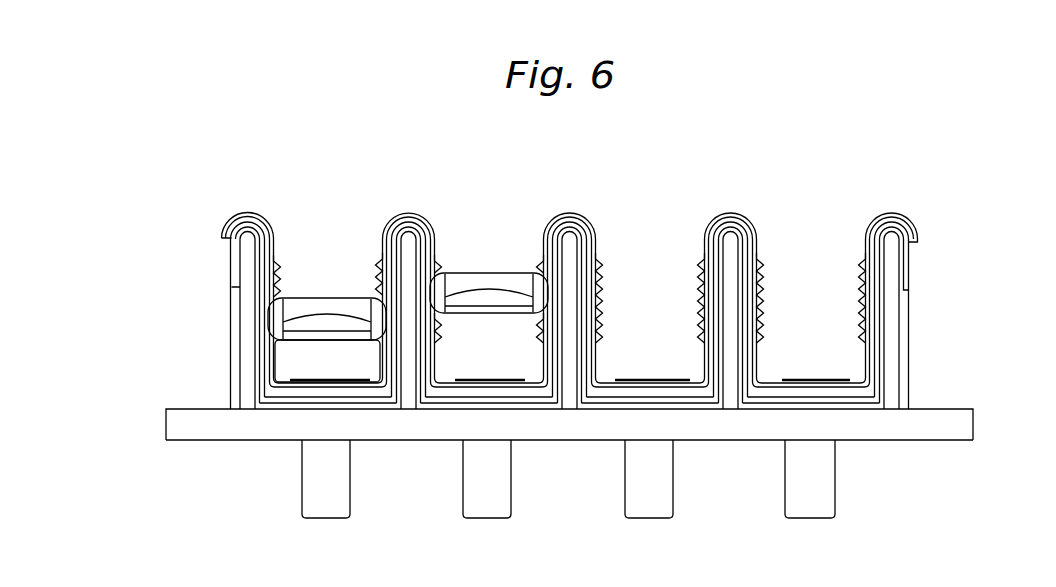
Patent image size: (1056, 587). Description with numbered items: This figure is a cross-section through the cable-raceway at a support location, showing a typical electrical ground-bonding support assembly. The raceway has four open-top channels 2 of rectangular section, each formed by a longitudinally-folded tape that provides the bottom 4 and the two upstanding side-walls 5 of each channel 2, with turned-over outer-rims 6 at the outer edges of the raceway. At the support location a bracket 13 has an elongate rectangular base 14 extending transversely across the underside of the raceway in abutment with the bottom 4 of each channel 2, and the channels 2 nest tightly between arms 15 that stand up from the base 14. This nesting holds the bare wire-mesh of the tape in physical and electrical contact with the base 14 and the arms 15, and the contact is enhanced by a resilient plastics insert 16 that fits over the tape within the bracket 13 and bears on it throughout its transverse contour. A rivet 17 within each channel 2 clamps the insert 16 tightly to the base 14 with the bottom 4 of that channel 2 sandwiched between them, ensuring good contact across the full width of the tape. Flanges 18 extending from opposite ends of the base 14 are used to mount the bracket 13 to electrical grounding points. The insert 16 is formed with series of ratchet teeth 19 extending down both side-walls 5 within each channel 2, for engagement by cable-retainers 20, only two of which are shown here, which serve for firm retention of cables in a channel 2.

The open-top channel 2 is at (459, 186).
The bottom 4 is at (777, 402).
The side-wall 5 is at (713, 255).
The turned-over outer-rim 6 is at (233, 267).
The bracket 13 is at (257, 456).
The base 14 is at (565, 430).
The arm 15 is at (247, 317).
The plastics insert 16 is at (267, 227).
The rivet 17 is at (822, 377).
The flange 18 is at (181, 418).
The ratchet teeth 19 is at (382, 267).
The cable-retainer 20 is at (312, 347).